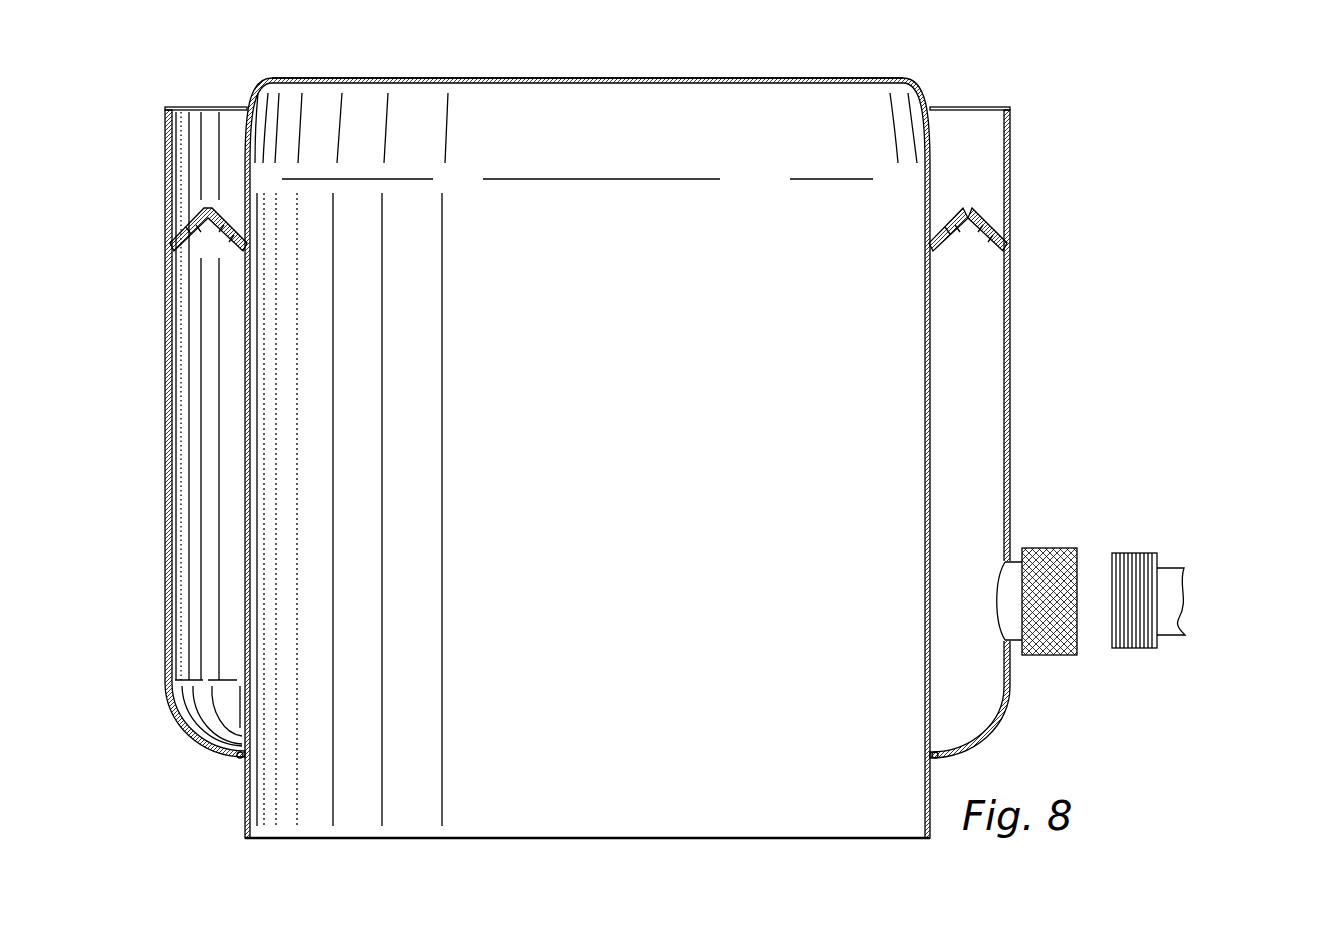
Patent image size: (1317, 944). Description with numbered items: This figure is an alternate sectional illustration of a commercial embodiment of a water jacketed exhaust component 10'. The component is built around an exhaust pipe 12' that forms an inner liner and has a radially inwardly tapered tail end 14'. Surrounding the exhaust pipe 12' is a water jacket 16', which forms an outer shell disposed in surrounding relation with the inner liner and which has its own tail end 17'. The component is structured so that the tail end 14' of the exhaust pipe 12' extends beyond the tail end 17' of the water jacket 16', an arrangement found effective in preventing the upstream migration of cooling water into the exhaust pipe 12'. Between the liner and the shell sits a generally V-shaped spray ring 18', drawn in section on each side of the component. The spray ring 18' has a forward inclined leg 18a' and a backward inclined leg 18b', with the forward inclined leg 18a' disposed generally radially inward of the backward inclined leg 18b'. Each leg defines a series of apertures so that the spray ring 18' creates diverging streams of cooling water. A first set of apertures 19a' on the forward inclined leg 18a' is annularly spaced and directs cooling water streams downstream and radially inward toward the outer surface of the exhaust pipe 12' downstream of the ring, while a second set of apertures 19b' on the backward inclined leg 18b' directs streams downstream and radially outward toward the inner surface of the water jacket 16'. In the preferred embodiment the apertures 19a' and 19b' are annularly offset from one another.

The water jacketed exhaust component 10' is at (694, 437).
The exhaust pipe 12' is at (609, 438).
The tail end of exhaust pipe 14' is at (622, 59).
The water jacket 16' is at (1035, 434).
The tail end of water jacket 17' is at (991, 85).
The spray ring 18' is at (593, 243).
The forward inclined leg 18a' is at (903, 245).
The backward inclined leg 18b' is at (1031, 251).
The first set of apertures 19a' is at (899, 215).
The second set of apertures 19b' is at (1036, 229).